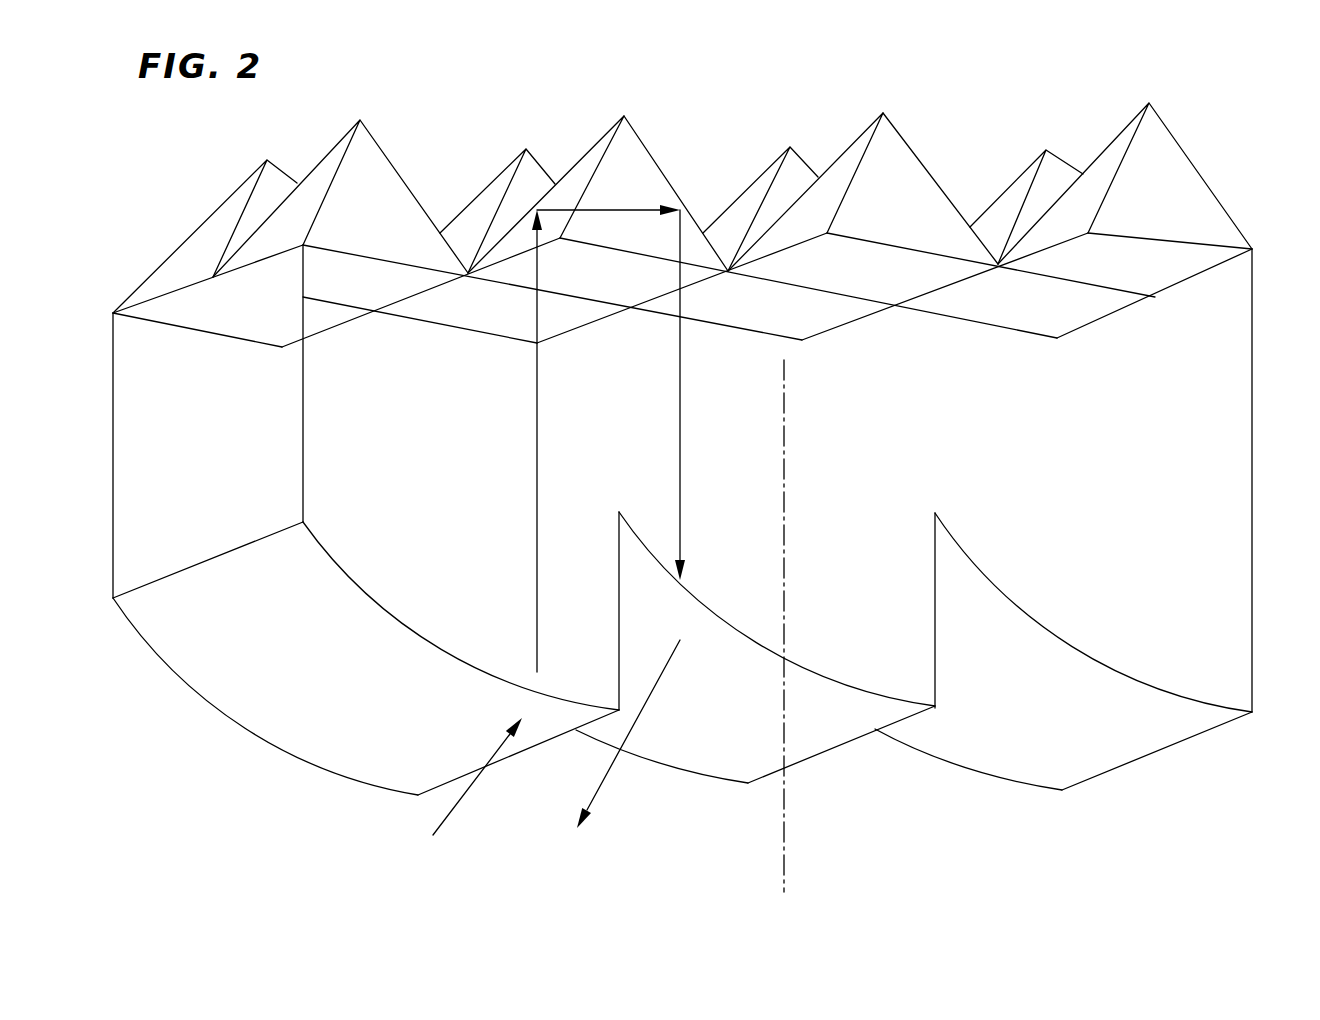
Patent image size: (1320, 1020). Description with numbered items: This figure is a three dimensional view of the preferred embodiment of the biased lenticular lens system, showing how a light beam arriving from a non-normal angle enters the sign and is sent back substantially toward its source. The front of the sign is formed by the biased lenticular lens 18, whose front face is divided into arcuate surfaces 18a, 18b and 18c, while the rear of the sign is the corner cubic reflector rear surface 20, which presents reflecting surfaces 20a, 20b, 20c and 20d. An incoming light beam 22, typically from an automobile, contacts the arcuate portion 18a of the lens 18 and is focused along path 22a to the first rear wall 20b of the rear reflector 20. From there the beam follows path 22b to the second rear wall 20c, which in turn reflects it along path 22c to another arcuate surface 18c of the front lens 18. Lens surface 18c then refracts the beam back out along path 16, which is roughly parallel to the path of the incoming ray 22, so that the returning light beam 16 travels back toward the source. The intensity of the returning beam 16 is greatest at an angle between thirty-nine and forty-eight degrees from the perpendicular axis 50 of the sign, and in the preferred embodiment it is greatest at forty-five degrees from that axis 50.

The returning light beam 16 is at (600, 790).
The biased lenticular lens 18 is at (711, 548).
The arcuate portion 18a is at (367, 764).
The arcuate surface 18b is at (936, 666).
The arcuate surface 18c is at (702, 733).
The corner cubic reflector rear surface 20 is at (700, 195).
The reflector surface 20a is at (402, 177).
The first rear wall 20b is at (584, 166).
The second rear wall 20c is at (677, 190).
The reflector surface 20d is at (838, 162).
The incoming light beam 22 is at (468, 792).
The path 22a is at (537, 453).
The path 22b is at (622, 208).
The path 22c is at (680, 438).
The perpendicular axis 50 is at (784, 825).